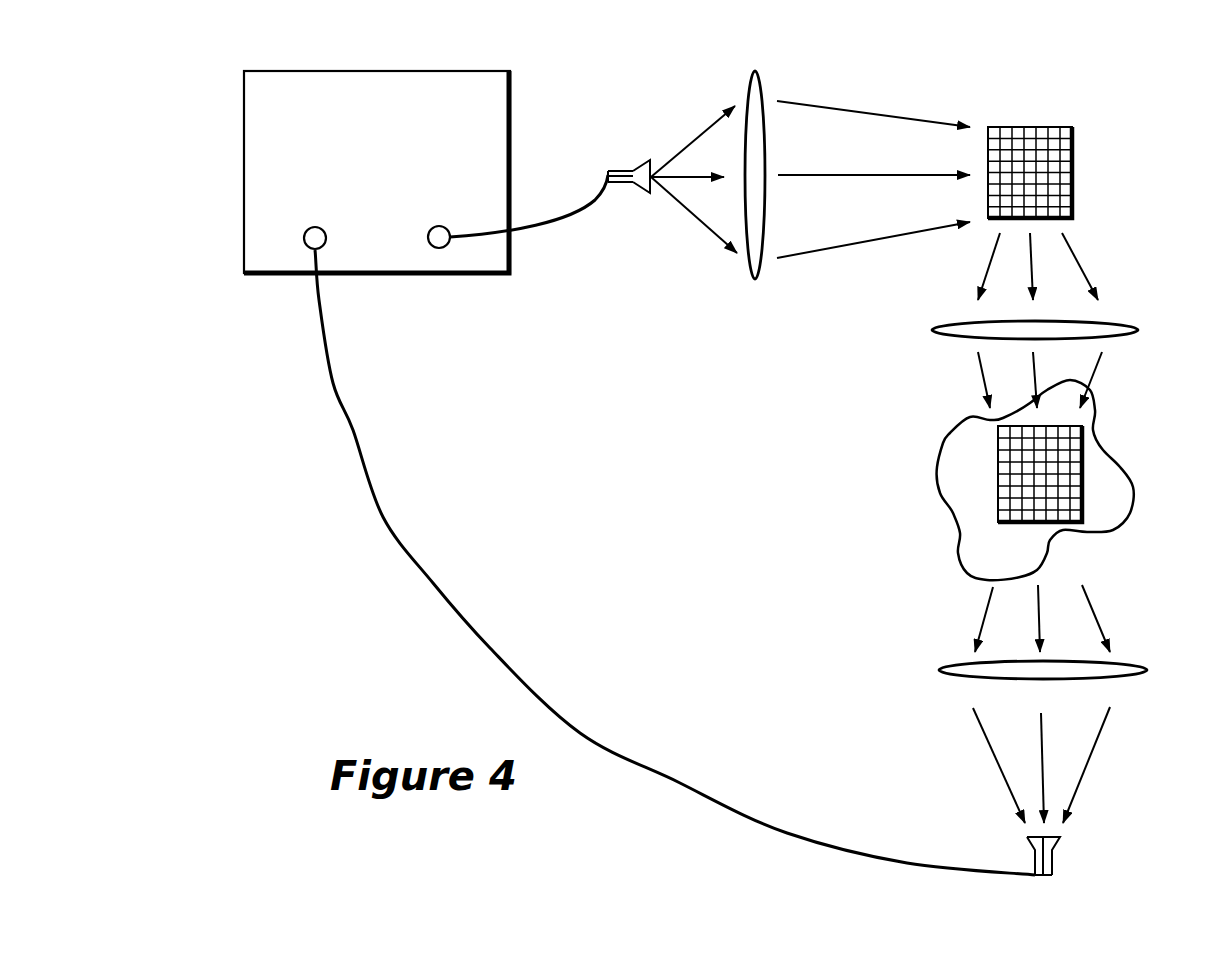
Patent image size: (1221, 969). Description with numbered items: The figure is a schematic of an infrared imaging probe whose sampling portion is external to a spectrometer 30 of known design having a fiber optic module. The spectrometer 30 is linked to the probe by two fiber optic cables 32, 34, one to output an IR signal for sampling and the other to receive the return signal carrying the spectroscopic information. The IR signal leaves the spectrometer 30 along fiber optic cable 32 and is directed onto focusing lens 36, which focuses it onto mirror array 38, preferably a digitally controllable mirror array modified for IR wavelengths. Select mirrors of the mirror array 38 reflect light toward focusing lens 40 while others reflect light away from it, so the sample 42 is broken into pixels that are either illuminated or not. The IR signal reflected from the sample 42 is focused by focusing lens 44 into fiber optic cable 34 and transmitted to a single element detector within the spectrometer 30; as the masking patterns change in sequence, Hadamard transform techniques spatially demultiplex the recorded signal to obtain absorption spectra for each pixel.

The spectrometer 30 is at (323, 87).
The fiber optic cable 32 is at (555, 228).
The fiber optic cable 34 is at (353, 428).
The focusing lens 36 is at (755, 66).
The mirror array 38 is at (1073, 158).
The focusing lens 40 is at (1138, 326).
The sample 42 is at (1110, 478).
The focusing lens 44 is at (1147, 667).